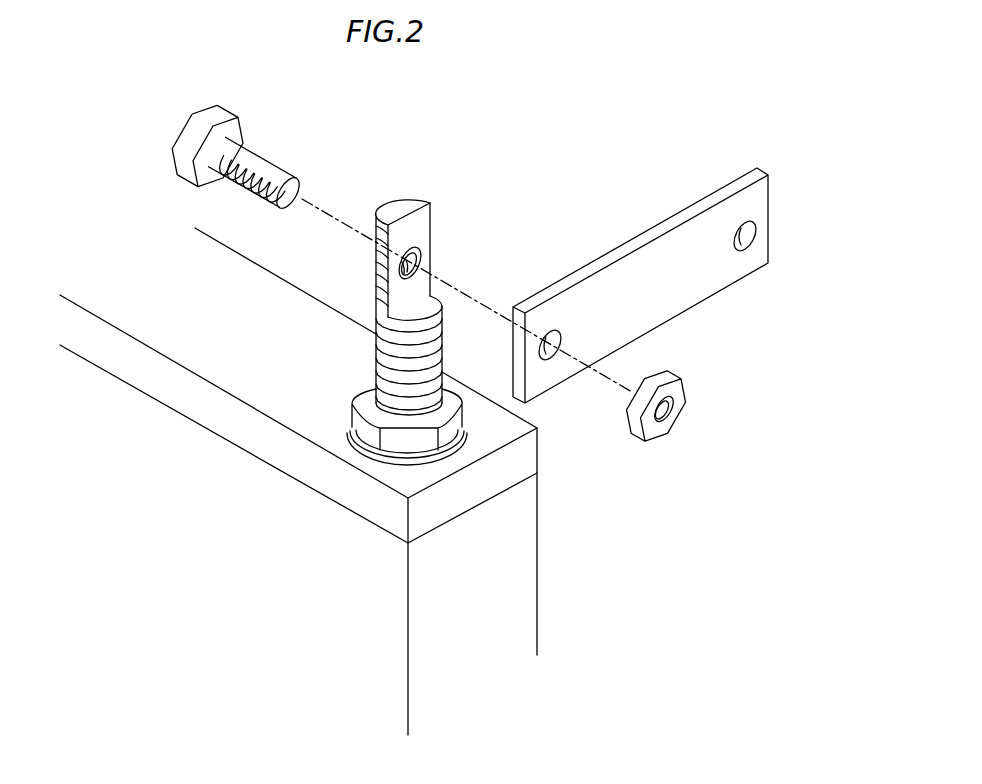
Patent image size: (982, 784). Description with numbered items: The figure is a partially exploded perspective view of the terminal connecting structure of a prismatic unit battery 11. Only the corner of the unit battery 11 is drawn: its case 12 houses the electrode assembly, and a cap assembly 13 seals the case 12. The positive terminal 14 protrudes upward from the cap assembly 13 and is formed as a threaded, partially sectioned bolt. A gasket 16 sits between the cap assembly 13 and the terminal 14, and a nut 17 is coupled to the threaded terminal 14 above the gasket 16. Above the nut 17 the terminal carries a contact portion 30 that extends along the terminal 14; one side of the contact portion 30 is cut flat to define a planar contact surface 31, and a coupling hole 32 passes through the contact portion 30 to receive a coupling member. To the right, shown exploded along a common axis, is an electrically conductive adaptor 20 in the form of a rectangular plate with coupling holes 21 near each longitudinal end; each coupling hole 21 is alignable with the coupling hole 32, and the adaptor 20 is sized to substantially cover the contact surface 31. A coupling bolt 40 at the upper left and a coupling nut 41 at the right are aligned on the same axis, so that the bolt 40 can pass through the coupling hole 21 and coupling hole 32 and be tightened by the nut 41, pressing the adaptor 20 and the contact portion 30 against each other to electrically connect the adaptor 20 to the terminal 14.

The unit battery 11 is at (557, 690).
The case 12 is at (497, 602).
The cap assembly 13 is at (467, 492).
The positive terminal 14 is at (386, 360).
The gasket 16 is at (373, 458).
The nut 17 is at (368, 432).
The electrically conductive adaptor 20 is at (665, 260).
The coupling hole 21 is at (552, 344).
The contact portion 30 is at (400, 210).
The contact surface 31 is at (415, 232).
The coupling hole 32 is at (398, 278).
The coupling bolt 40 is at (267, 157).
The coupling nut 41 is at (677, 420).